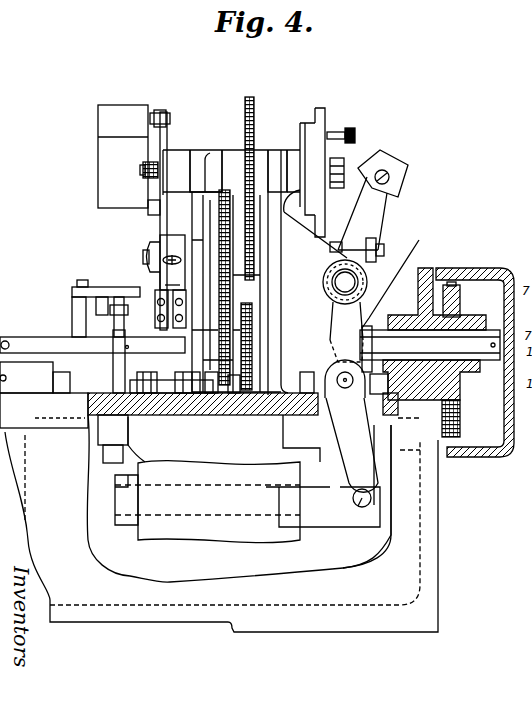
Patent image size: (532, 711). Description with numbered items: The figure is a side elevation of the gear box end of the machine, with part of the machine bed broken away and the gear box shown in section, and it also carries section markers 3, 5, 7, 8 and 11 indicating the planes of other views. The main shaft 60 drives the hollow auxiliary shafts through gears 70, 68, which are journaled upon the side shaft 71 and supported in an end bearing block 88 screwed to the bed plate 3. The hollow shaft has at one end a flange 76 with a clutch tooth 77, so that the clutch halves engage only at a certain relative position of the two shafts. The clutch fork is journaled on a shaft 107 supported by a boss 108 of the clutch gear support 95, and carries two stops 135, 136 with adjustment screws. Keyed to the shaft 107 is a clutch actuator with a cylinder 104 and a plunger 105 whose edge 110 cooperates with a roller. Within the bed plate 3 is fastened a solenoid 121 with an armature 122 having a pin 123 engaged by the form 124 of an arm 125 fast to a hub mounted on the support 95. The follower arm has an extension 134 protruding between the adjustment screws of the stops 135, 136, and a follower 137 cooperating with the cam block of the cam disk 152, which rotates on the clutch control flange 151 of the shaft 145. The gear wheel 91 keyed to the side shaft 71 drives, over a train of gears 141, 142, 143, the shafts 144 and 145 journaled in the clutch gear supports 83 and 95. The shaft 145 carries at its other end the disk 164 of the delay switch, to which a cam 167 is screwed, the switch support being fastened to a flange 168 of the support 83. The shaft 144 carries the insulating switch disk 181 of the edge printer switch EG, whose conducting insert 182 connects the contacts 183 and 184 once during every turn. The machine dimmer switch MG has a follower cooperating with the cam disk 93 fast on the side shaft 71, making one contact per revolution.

The bed plate 3 is at (418, 178).
The section line 5- 5 is at (320, 57).
The section line 7- 7 is at (477, 222).
The section line 8- 8 is at (143, 272).
The section line 11- 11 is at (108, 86).
The edge printer switch EG is at (136, 230).
The machine dimmer switch MG is at (100, 286).
The main shaft 60 is at (6, 378).
The gear 68 is at (452, 285).
The gear 70 is at (462, 421).
The side shaft 71 is at (36, 346).
The flange 76 is at (379, 384).
The clutch tooth 77 is at (372, 330).
The clutch gear support 83 is at (205, 150).
The end bearing block 88 is at (420, 270).
The gear wheel 91 is at (234, 388).
The cam disk 93 is at (119, 352).
The clutch gear support 95 is at (262, 150).
The cylinder 104 is at (335, 338).
The plunger 105 is at (330, 320).
The shaft 107 is at (333, 278).
The boss 108 is at (332, 290).
The edge 110 is at (322, 386).
The solenoid 121 is at (196, 540).
The armature 122 is at (300, 538).
The pin 123 is at (360, 515).
The form 124 is at (352, 492).
The arm 125 is at (352, 432).
The extension 134 is at (368, 250).
The stop 135 is at (337, 242).
The stop 136 is at (377, 246).
The follower 137 is at (360, 183).
The gear 141 is at (233, 300).
The gear 142 is at (254, 247).
The gear 143 is at (252, 100).
The shaft 144 is at (149, 262).
The shaft 145 is at (340, 176).
The clutch control flange 151 is at (305, 125).
The cam disk 152 is at (322, 116).
The disk 164 is at (168, 128).
The cam 167 is at (158, 108).
The flange 168 is at (148, 210).
The switch disk 181 is at (184, 229).
The conducting insert 182 is at (173, 253).
The contact 183 is at (173, 279).
The contact 184 is at (172, 330).